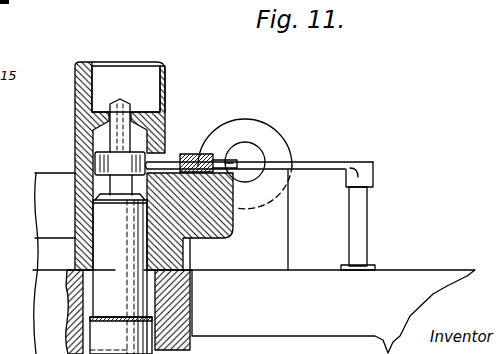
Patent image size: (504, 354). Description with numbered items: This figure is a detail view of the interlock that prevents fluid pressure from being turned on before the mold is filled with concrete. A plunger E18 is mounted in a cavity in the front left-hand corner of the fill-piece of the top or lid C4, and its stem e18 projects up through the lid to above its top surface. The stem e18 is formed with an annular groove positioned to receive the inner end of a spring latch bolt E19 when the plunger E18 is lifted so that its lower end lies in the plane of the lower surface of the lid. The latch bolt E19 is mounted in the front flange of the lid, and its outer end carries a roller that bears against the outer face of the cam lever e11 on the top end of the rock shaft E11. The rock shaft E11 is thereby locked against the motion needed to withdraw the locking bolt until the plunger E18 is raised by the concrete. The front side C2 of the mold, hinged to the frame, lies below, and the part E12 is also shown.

The stem e18 is at (131, 109).
The spring latch bolt E19 is at (203, 156).
The cam lever e11 is at (326, 151).
The rock shaft E11 is at (366, 245).
The front side C2 is at (252, 303).
The top or lid C4 is at (47, 213).
The bracket E12 is at (43, 324).
The plunger E18 is at (112, 348).